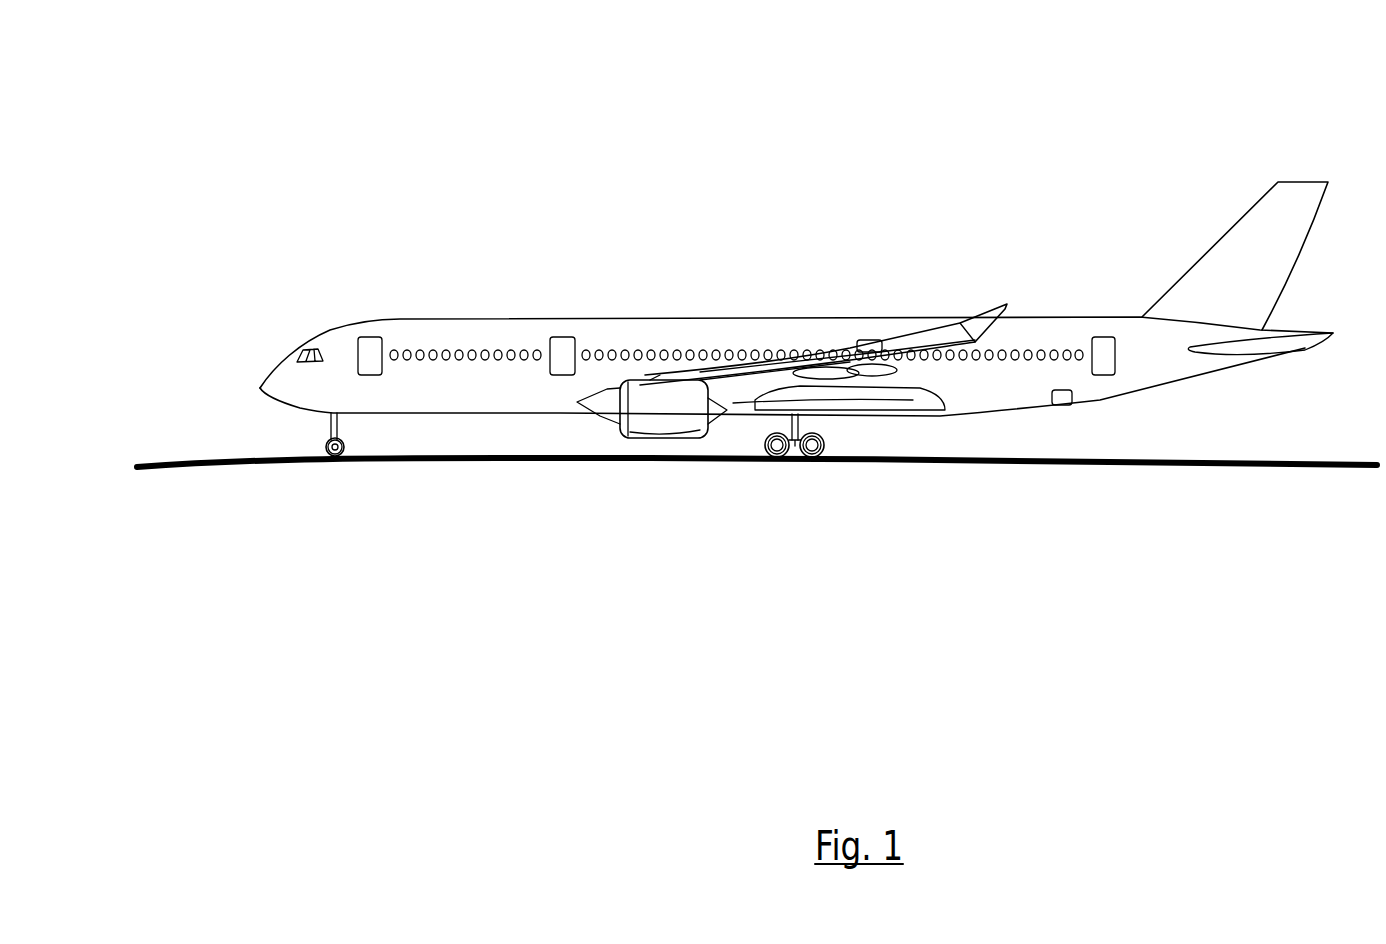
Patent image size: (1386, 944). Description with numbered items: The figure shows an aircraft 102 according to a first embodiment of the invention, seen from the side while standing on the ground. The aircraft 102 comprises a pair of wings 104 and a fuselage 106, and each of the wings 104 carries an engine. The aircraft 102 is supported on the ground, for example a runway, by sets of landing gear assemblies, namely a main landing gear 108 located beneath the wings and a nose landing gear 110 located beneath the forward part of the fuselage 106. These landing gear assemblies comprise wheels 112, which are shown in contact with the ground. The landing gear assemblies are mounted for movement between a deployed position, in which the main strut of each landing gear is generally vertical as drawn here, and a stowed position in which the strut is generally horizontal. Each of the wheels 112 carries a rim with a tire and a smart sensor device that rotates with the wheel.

The aircraft 102 is at (800, 138).
The wings 104 is at (961, 330).
The fuselage 106 is at (404, 347).
The main landing gear 108 is at (813, 447).
The nose landing gear 110 is at (322, 460).
The wheels 112 is at (345, 448).